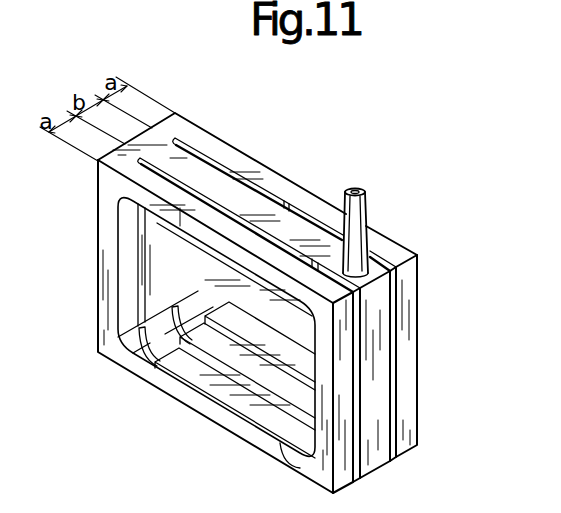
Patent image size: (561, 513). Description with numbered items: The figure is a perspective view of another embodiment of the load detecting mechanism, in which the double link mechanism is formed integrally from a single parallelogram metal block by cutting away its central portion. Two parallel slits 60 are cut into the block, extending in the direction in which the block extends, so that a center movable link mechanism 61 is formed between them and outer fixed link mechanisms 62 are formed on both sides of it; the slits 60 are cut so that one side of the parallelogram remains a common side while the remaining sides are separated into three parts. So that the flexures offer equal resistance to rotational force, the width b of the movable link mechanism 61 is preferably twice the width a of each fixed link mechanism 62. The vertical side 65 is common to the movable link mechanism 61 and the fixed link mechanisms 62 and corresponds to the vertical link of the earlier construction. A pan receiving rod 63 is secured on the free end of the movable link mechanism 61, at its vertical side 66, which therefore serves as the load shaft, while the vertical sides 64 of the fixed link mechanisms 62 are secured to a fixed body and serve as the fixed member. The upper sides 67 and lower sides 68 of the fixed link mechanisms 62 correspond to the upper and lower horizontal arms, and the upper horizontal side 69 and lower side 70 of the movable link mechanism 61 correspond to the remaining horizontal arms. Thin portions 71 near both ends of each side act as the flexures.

The slits 60 is at (180, 181).
The center movable link mechanism 61 is at (266, 207).
The outer fixed link mechanisms 62 is at (256, 172).
The pan receiving rod 63 is at (366, 192).
The vertical sides of the fixed link mechanisms 64 is at (347, 421).
The common vertical side 65 is at (104, 249).
The vertical side of the movable link mechanism 66 is at (380, 328).
The upper sides of the fixed link mechanisms 67 is at (288, 258).
The lower sides of the fixed link mechanisms 68 is at (253, 389).
The upper horizontal side of the movable link mechanism 69 is at (322, 250).
The lower side of the movable link mechanism 70 is at (220, 353).
The thin portions 71 is at (157, 223).